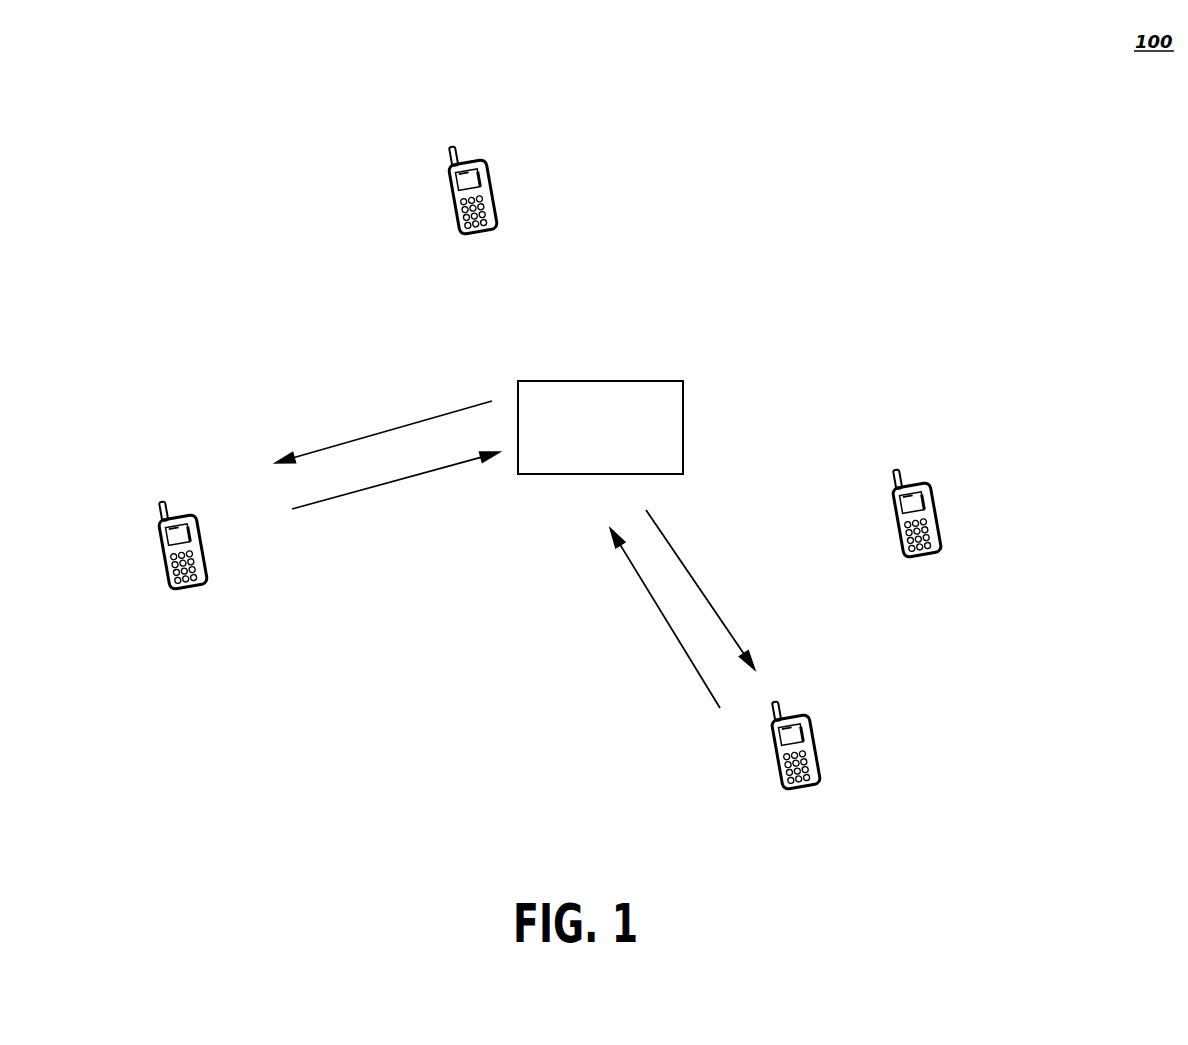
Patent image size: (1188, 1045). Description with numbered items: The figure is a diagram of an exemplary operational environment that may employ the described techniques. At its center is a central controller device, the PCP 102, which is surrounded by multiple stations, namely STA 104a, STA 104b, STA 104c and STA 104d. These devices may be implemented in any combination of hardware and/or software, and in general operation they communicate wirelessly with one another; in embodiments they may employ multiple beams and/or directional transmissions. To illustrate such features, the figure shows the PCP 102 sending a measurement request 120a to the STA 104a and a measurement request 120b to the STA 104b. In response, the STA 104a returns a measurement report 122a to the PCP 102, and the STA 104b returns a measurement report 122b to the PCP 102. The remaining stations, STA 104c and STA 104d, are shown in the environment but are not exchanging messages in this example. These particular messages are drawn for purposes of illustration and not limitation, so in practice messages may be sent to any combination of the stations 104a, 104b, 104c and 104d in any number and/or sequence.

The central controller device (PCP) 102 is at (657, 380).
The station (STA) 104a is at (810, 723).
The station (STA) 104b is at (203, 548).
The station (STA) 104c is at (500, 172).
The station (STA) 104d is at (938, 500).
The measurement request 120a is at (682, 558).
The measurement request 120b is at (407, 426).
The measurement report 122a is at (627, 558).
The measurement report 122b is at (458, 465).